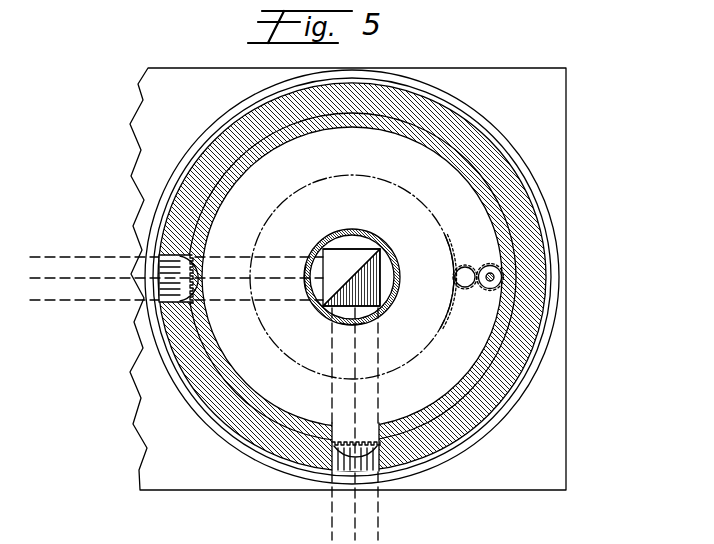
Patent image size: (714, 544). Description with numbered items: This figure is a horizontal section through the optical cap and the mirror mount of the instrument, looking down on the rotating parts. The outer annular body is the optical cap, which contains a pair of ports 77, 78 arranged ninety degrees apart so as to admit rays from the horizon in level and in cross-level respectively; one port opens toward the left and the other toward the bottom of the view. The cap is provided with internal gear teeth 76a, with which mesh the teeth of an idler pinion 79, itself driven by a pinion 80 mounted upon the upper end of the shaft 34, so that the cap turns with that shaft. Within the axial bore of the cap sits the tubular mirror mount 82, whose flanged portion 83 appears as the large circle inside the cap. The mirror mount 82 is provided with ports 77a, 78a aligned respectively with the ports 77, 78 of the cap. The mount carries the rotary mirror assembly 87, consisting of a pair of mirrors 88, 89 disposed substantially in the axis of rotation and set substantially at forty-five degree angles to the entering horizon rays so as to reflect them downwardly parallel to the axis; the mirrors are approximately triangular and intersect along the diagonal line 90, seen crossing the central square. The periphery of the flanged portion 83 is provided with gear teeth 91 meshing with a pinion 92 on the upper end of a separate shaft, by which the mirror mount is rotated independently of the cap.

The shaft 34 is at (512, 281).
The internal gear teeth 76a is at (166, 258).
The port 77 is at (162, 300).
The port 77a is at (318, 275).
The port 78 is at (334, 475).
The port 78a is at (367, 322).
The idler pinion 79 is at (525, 279).
The pinion 80 is at (494, 274).
The tubular mirror mount 82 is at (398, 258).
The flanged portion 83 is at (407, 224).
The rotary mirror assembly 87 is at (359, 246).
The mirror 88 is at (332, 272).
The mirror 89 is at (373, 287).
The diagonal line 90 is at (351, 276).
The gear teeth 91 is at (456, 262).
The pinion 92 is at (468, 268).